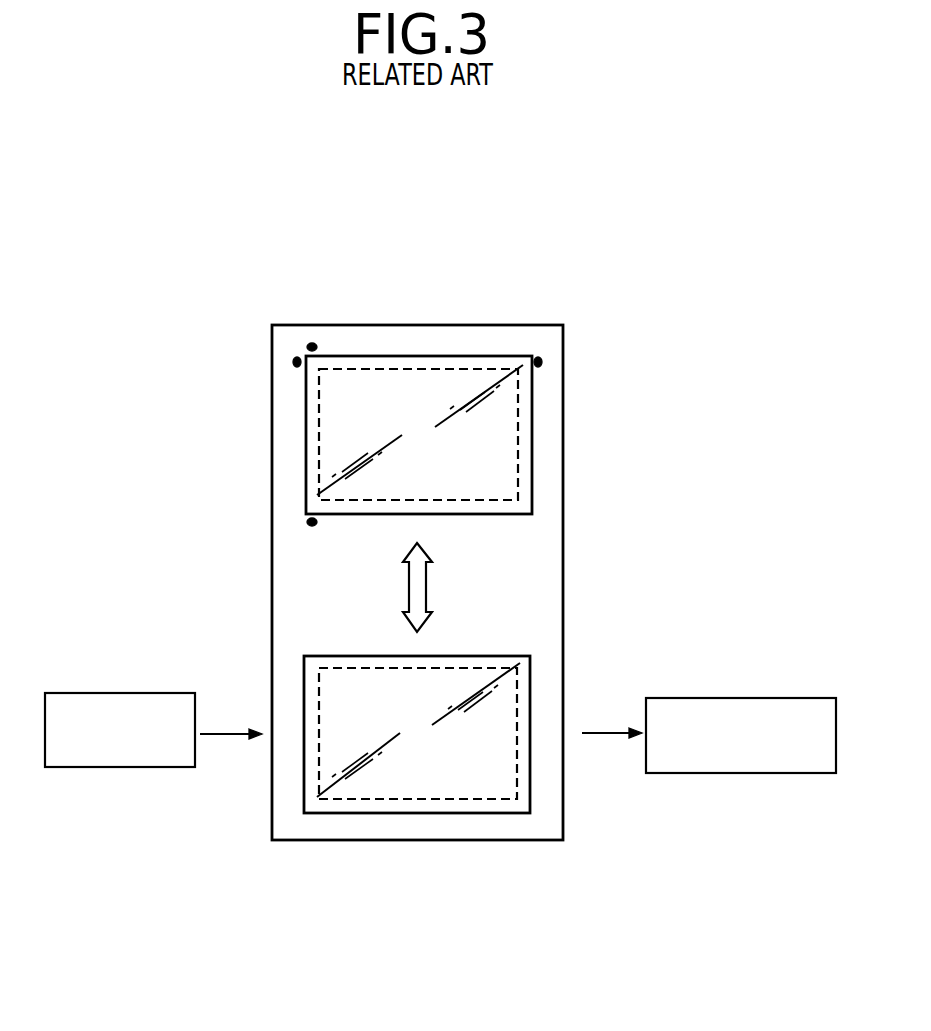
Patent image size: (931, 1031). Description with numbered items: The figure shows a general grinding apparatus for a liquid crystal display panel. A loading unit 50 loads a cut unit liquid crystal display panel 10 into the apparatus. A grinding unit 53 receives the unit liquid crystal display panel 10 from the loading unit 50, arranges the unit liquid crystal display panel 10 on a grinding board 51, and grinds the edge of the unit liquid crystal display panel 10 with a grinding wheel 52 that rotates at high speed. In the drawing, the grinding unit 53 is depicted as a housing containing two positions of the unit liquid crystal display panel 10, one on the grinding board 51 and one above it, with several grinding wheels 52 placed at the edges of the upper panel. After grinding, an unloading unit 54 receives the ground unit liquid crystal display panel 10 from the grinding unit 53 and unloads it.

The unit liquid crystal display panel 10 is at (532, 435).
The loading unit 50 is at (117, 693).
The grinding board 51 is at (469, 800).
The grinding wheel 52 is at (297, 358).
The grinding unit 53 is at (563, 478).
The unloading unit 54 is at (710, 697).